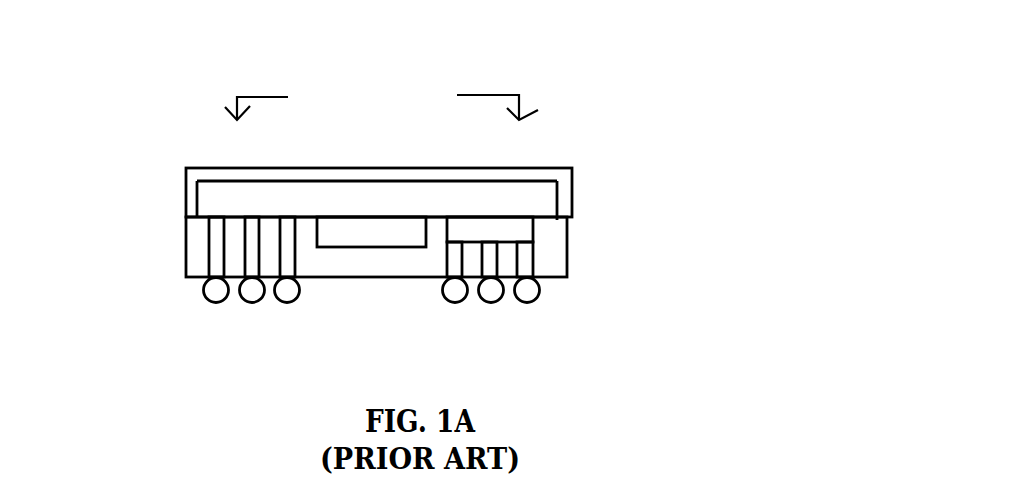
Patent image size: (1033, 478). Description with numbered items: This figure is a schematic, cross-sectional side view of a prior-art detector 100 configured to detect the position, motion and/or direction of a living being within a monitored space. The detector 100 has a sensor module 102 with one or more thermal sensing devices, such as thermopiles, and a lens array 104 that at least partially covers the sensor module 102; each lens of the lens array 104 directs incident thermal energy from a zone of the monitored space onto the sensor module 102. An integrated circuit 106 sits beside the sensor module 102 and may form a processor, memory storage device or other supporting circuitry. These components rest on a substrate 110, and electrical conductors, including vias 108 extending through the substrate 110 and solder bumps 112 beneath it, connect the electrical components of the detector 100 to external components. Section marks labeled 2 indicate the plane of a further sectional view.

The detector 100 is at (592, 137).
The sensor module 102 is at (367, 230).
The lens array 104 is at (248, 163).
The integrated circuit 106 is at (498, 230).
The vias 108 is at (202, 233).
The substrate 110 is at (467, 272).
The solder bumps 112 is at (540, 298).
The section line 2- 2 is at (381, 82).